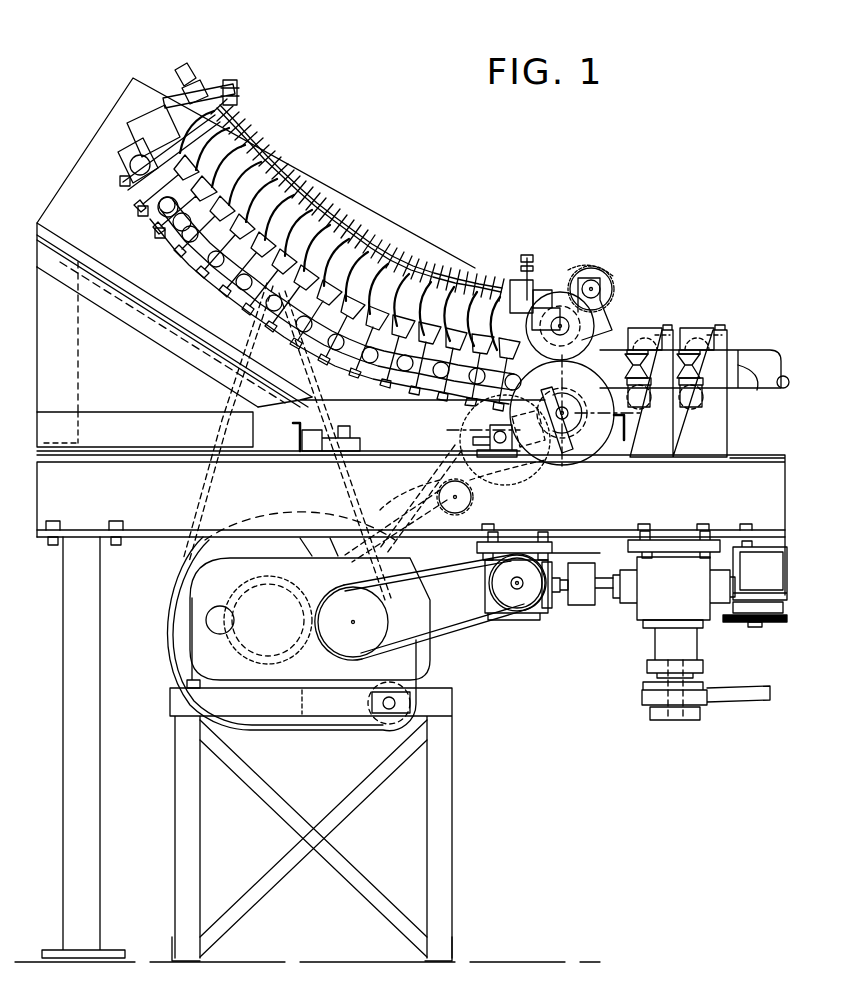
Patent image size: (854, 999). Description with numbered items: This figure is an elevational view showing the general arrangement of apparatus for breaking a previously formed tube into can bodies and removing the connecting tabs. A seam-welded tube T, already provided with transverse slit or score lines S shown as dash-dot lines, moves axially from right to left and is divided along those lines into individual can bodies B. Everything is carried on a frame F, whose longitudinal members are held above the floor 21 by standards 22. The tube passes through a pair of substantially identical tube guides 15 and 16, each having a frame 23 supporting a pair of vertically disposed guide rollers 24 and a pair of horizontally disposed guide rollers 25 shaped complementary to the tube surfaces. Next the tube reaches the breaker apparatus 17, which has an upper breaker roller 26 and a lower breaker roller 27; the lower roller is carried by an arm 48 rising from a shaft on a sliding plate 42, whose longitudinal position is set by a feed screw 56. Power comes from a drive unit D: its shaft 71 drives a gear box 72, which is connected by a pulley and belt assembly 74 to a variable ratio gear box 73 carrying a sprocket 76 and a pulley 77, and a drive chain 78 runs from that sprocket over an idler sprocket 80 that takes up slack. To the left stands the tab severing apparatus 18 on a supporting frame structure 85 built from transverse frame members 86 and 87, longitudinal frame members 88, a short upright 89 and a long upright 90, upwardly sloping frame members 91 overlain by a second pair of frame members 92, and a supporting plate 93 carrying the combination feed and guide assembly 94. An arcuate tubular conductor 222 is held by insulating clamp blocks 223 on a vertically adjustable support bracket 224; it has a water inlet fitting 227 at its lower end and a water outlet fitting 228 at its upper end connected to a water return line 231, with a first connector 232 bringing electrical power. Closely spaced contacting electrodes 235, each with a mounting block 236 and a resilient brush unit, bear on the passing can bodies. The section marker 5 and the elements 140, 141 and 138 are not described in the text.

The floor 21 is at (520, 965).
The standards 22 is at (105, 835).
The support frame 140 is at (448, 848).
The idler pulley 141 is at (392, 732).
The transverse frame member 87 is at (255, 462).
The longitudinally extending frame members 88 is at (118, 412).
The transverse frame member 86 is at (37, 428).
The short upright 89 is at (217, 398).
The supporting frame structure 85 is at (64, 166).
The second pair of frame members 92 is at (90, 235).
The upwardly sloping frame members 91 is at (115, 312).
The long upright 90 is at (78, 372).
The supporting plate 93 is at (127, 107).
The tab severing apparatus 18 is at (352, 236).
The combination feed and guide assembly 94 is at (158, 241).
The mounting block 236 is at (270, 200).
The contacting electrodes 235 is at (238, 145).
The tubular conductor 222 is at (425, 278).
The support bracket 224 is at (165, 100).
The water outlet fitting 228 is at (185, 63).
The clamp blocks 223 is at (203, 88).
The first connector 232 is at (248, 84).
The water return line 231 is at (527, 255).
The water inlet fitting 227 is at (545, 290).
The breaker apparatus 17 is at (611, 268).
The upper breaker roller 26 is at (610, 322).
The can bodies B is at (596, 360).
The frame 23 is at (720, 418).
The tube guide 16 is at (672, 313).
The tube guide 15 is at (727, 315).
The horizontally disposed guide rollers 25 is at (628, 332).
The vertically disposed guide rollers 24 is at (633, 370).
The tube T is at (752, 352).
The slit or score lines S is at (758, 384).
The lower breaker roller 27 is at (580, 456).
The arm 48 is at (540, 440).
The sliding plate 42 is at (444, 450).
The feed screw 56 is at (350, 438).
The section line 5- 5 is at (448, 437).
The idler sprocket 80 is at (474, 497).
The drive chain 78 is at (425, 520).
The pulley 77 is at (168, 650).
The belt 138 is at (172, 550).
The variable ratio gear box 73 is at (385, 556).
The sprocket 76 is at (290, 606).
The pulley and belt assembly 74 is at (448, 628).
The gear box 72 is at (540, 612).
The shaft 71 is at (570, 605).
The drive unit D is at (631, 631).
The frame F is at (43, 552).